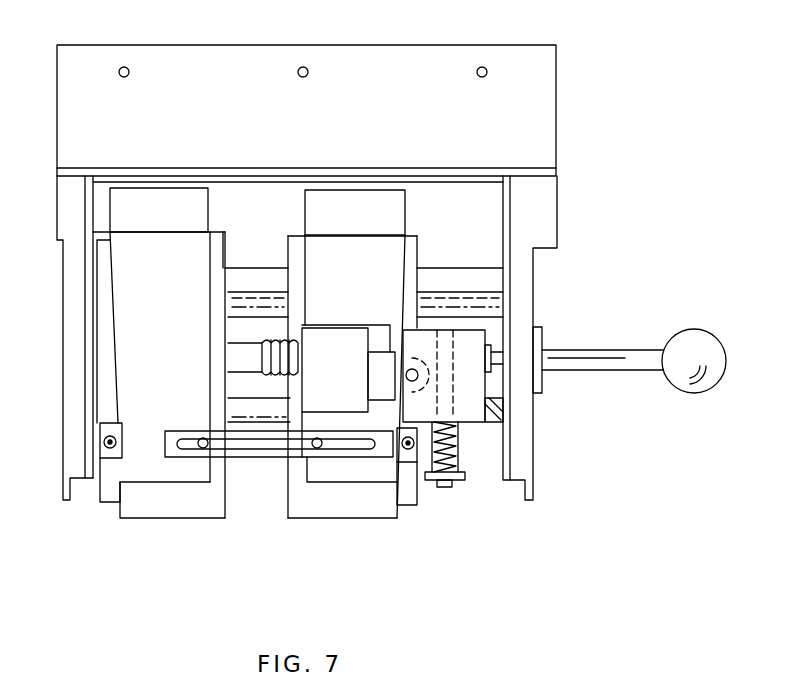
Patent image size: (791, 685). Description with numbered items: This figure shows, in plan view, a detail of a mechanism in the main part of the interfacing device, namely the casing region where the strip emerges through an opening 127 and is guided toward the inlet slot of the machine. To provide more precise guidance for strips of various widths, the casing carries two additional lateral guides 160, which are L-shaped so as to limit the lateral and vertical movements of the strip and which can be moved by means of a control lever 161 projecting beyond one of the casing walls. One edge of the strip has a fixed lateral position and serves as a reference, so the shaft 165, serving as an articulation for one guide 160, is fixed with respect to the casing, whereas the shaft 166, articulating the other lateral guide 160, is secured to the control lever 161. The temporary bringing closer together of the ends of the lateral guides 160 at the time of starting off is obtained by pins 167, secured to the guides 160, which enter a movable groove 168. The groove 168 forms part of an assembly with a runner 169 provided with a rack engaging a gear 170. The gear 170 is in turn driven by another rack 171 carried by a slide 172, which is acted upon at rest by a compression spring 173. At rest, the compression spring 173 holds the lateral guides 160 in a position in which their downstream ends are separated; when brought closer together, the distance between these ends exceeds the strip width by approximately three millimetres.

The opening 127 is at (231, 133).
The lateral guide 160 is at (167, 247).
The control lever 161 is at (708, 335).
The shaft 165 is at (110, 457).
The shaft 166 is at (410, 462).
The pin 167 is at (202, 448).
The groove 168 is at (260, 445).
The runner 169 is at (382, 448).
The gear 170 is at (418, 372).
The rack 171 is at (435, 390).
The slide 172 is at (445, 485).
The compression spring 173 is at (460, 448).